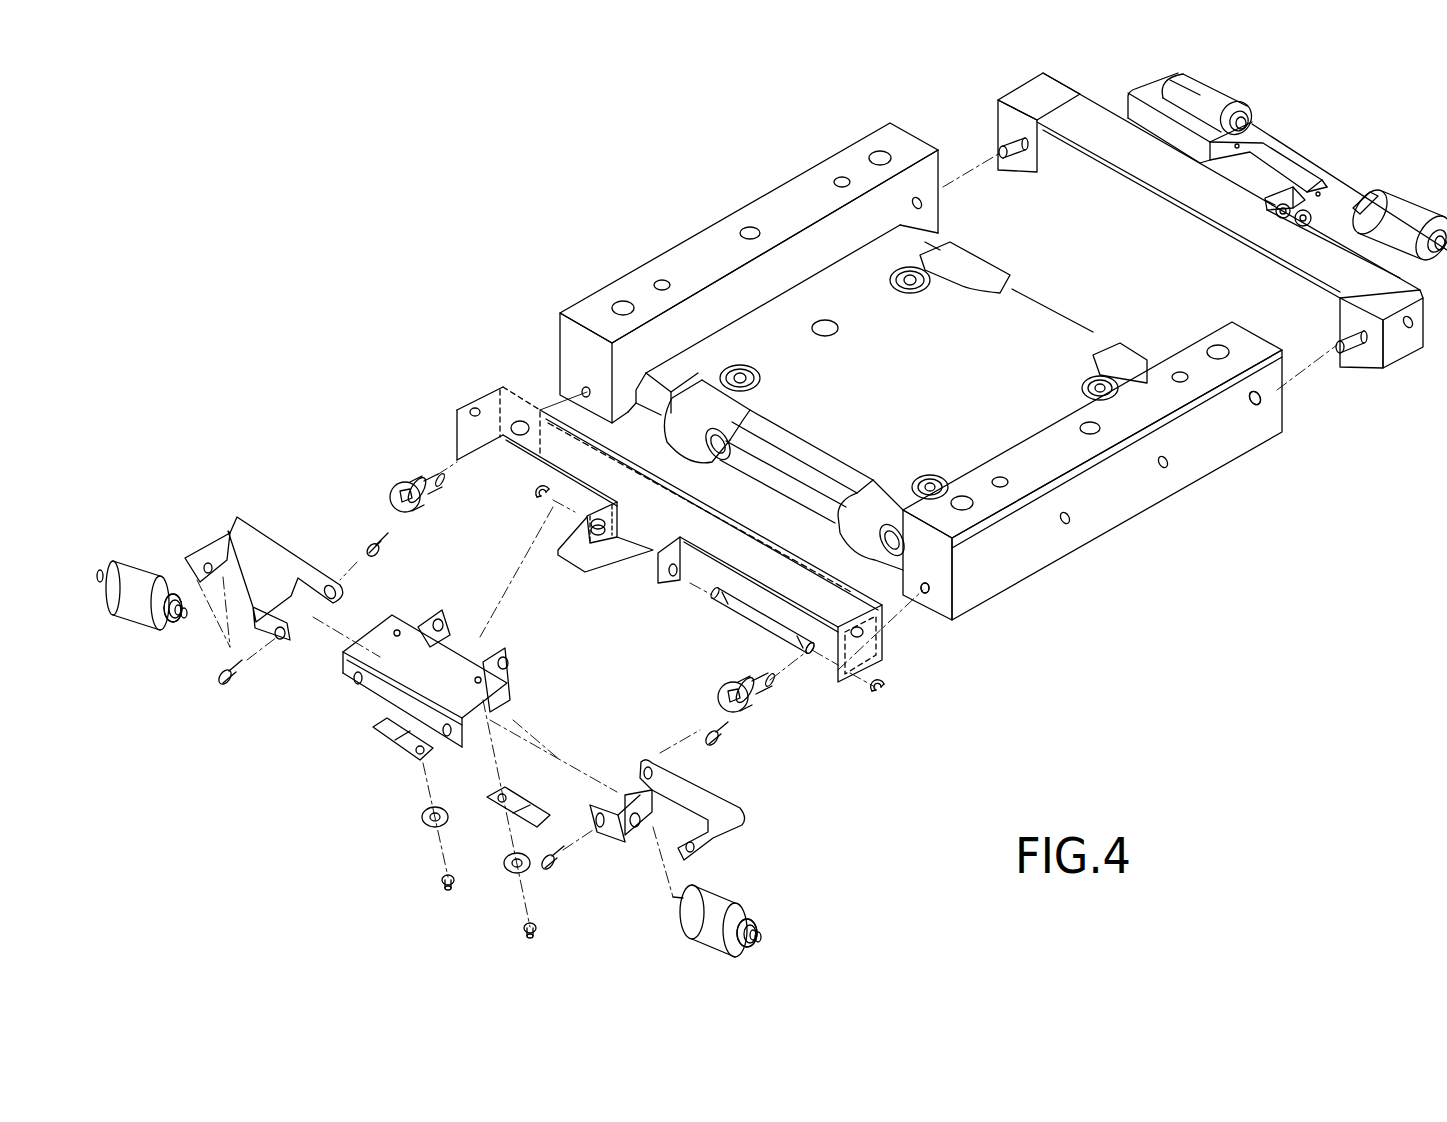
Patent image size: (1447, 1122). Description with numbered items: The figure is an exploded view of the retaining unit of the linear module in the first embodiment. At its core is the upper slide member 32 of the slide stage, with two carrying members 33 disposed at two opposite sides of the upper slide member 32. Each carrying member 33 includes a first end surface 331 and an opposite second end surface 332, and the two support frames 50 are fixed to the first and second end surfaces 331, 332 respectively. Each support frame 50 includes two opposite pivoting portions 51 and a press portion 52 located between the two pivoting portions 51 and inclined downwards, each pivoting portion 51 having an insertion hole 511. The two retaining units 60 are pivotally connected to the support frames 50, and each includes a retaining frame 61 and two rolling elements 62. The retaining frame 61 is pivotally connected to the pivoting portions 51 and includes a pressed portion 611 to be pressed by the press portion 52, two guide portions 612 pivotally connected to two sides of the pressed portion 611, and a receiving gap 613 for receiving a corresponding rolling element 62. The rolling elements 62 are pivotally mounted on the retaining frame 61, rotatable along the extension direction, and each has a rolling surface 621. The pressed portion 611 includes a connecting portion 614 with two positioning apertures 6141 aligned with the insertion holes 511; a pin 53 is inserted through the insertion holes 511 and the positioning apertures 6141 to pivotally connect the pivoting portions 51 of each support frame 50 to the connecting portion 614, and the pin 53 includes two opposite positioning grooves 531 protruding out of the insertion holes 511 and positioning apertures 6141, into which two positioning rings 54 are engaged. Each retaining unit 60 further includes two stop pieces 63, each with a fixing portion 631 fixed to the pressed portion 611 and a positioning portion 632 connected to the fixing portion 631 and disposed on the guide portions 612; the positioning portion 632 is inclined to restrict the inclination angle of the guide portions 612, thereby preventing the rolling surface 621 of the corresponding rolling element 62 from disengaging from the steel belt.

The upper slide member 32 is at (1003, 330).
The carrying member 33 is at (690, 253).
The first end surface 331 is at (942, 585).
The second end surface 332 is at (1282, 417).
The support frame 50 is at (458, 390).
The pivoting portion 51 is at (658, 568).
The insertion hole 511 is at (675, 580).
The press portion 52 is at (612, 565).
The pin 53 is at (740, 613).
The positioning groove 531 is at (807, 657).
The positioning ring 54 is at (887, 692).
The retaining unit 60 is at (1333, 157).
The retaining frame 61 is at (525, 693).
The pressed portion 611 is at (385, 657).
The guide portion 612 is at (262, 552).
The receiving gap 613 is at (217, 557).
The connecting portion 614 is at (442, 620).
The positioning aperture 6141 is at (447, 627).
The rolling element 62 is at (152, 557).
The rolling surface 621 is at (133, 600).
The stop piece 63 is at (384, 753).
The fixing portion 631 is at (407, 757).
The positioning portion 632 is at (370, 723).